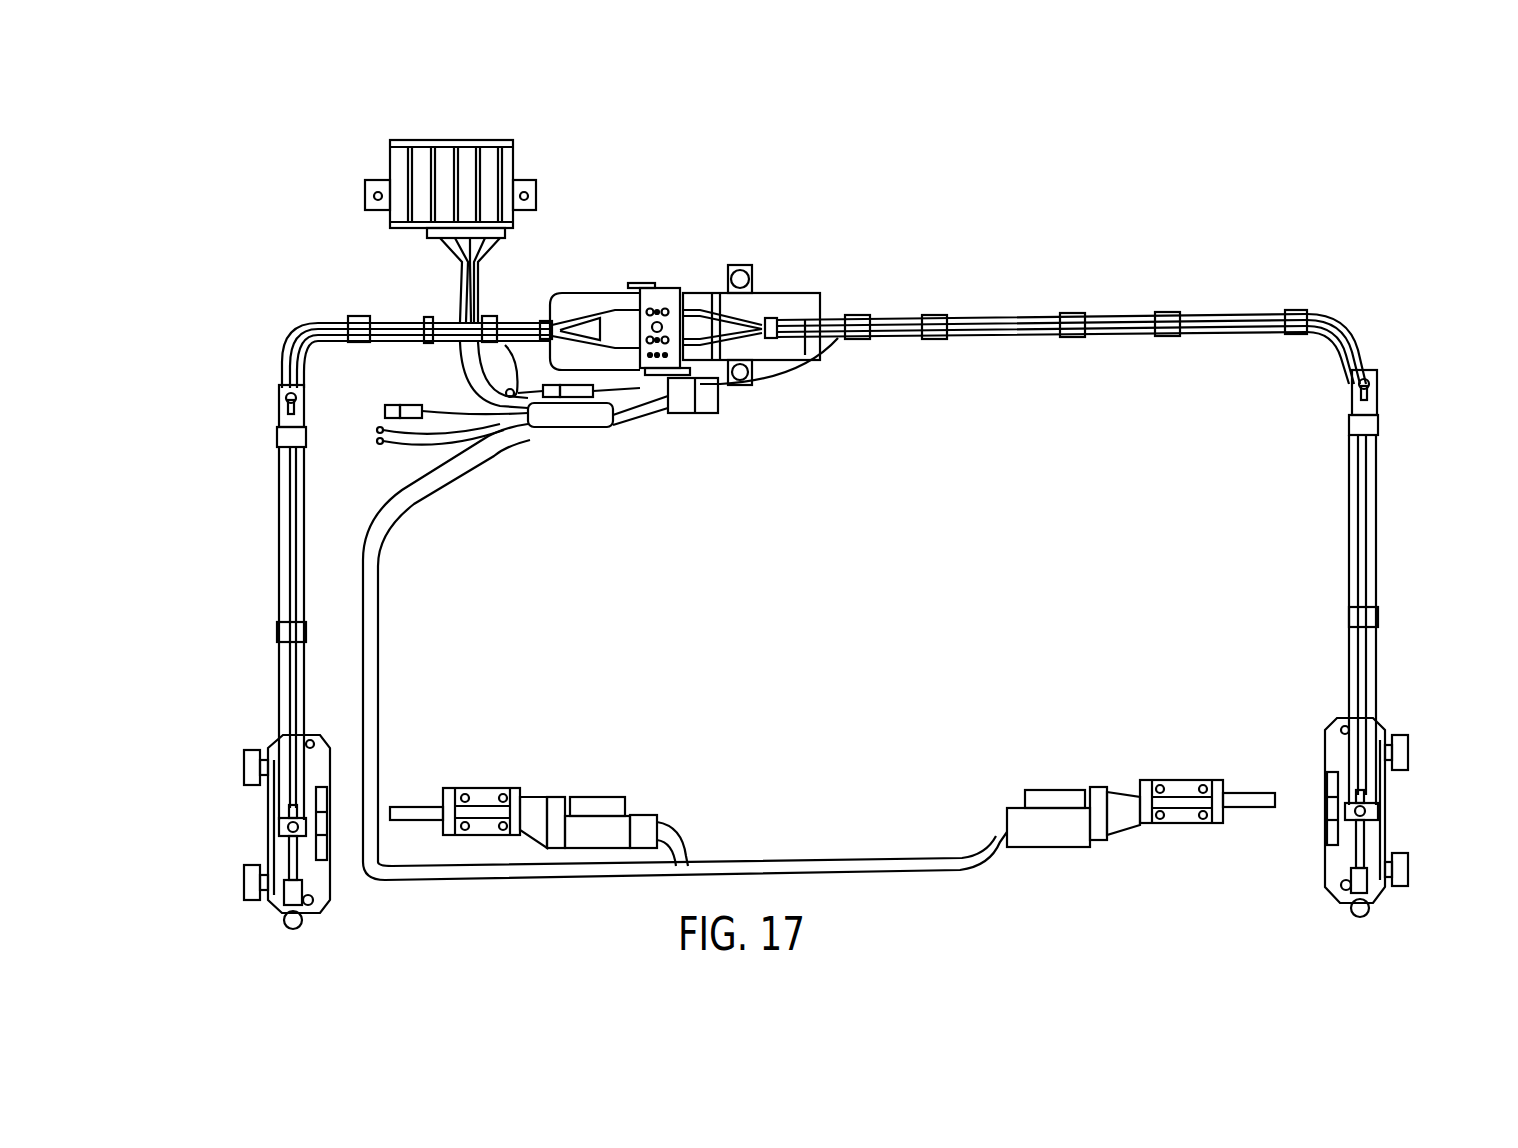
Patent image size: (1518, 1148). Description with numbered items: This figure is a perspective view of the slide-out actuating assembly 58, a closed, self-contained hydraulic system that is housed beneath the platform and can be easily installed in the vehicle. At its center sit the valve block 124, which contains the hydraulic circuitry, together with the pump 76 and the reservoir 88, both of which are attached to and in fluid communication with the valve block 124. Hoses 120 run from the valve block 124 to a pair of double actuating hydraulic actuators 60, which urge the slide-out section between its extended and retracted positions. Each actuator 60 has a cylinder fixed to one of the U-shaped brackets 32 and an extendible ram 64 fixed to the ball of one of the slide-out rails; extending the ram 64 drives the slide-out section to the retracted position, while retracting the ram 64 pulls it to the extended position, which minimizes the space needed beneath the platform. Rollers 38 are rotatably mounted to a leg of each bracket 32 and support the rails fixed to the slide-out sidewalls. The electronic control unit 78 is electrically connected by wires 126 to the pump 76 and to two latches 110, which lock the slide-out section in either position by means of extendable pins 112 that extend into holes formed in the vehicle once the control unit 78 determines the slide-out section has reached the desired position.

The slide-out actuating assembly 58 is at (1198, 270).
The electronic control unit 78 is at (493, 140).
The wires 126 is at (472, 292).
The hoses 120 is at (400, 320).
The reservoir 88 is at (577, 305).
The valve block 124 is at (668, 290).
The pump 76 is at (742, 296).
The double actuating hydraulic actuators 60 is at (306, 708).
The U-shaped brackets 32 is at (330, 903).
The rollers 38 is at (243, 755).
The extendible ram 64 is at (287, 858).
The extendable pins 112 is at (393, 803).
The latches 110 is at (537, 790).